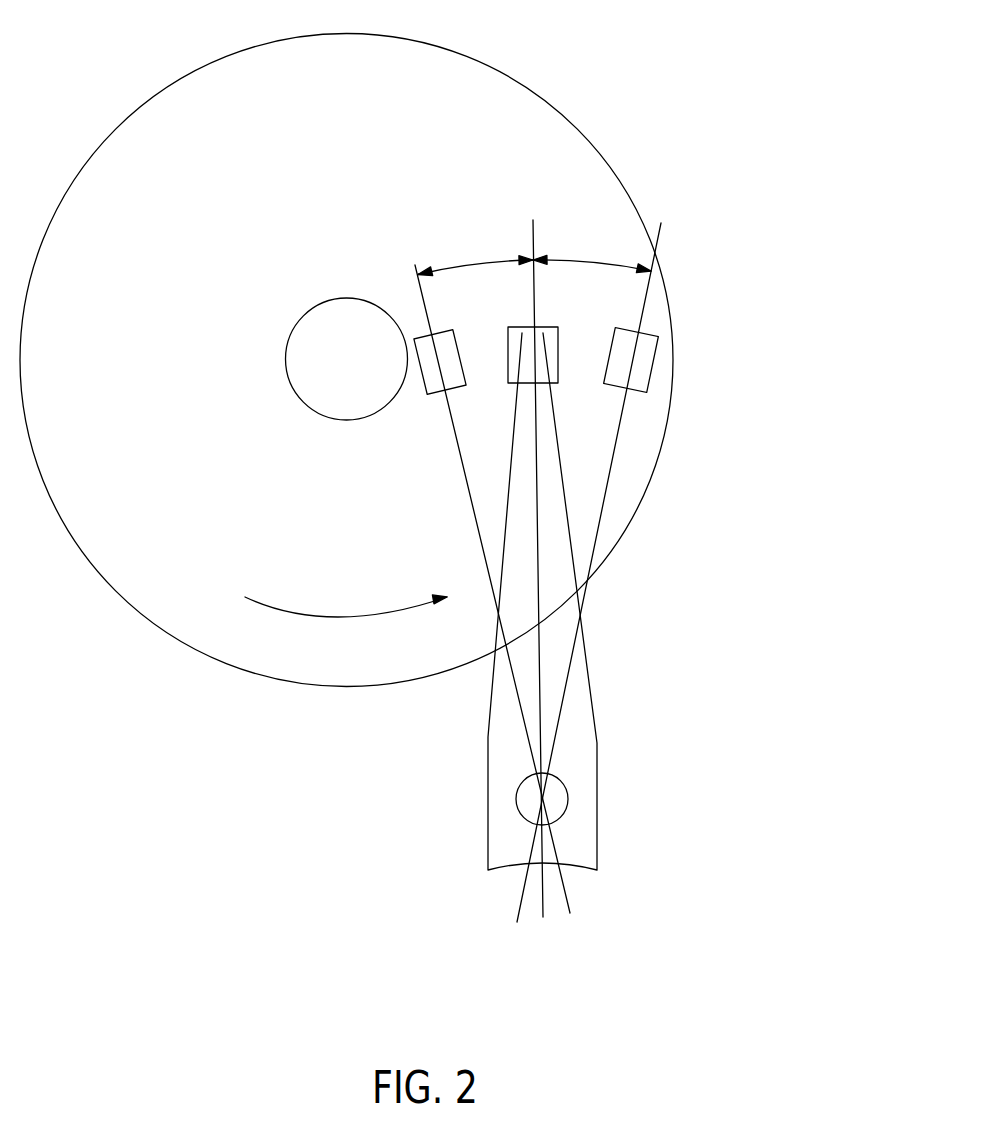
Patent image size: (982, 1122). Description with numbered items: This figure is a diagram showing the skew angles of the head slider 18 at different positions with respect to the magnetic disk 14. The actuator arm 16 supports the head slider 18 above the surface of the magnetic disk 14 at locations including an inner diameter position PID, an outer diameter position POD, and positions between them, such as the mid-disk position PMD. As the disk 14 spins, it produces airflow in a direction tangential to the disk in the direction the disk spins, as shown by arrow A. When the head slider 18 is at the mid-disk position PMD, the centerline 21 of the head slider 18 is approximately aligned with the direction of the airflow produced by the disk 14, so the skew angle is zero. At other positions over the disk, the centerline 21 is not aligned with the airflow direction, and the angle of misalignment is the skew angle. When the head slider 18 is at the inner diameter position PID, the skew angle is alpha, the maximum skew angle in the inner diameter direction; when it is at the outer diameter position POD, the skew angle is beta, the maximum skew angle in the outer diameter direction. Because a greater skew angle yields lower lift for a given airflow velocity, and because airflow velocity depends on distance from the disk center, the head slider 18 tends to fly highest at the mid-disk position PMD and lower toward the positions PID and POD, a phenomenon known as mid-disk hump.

The magnetic disk 14 is at (149, 170).
The actuator arm 16 is at (618, 717).
The head slider 18 is at (623, 343).
The centerline 21 is at (532, 230).
The skew angle α alpha is at (475, 252).
The skew angle β beta is at (592, 246).
The arrow A is at (330, 617).
The inner diameter position PID is at (418, 403).
The mid-disk position PMD is at (570, 395).
The outer diameter position POD is at (662, 373).